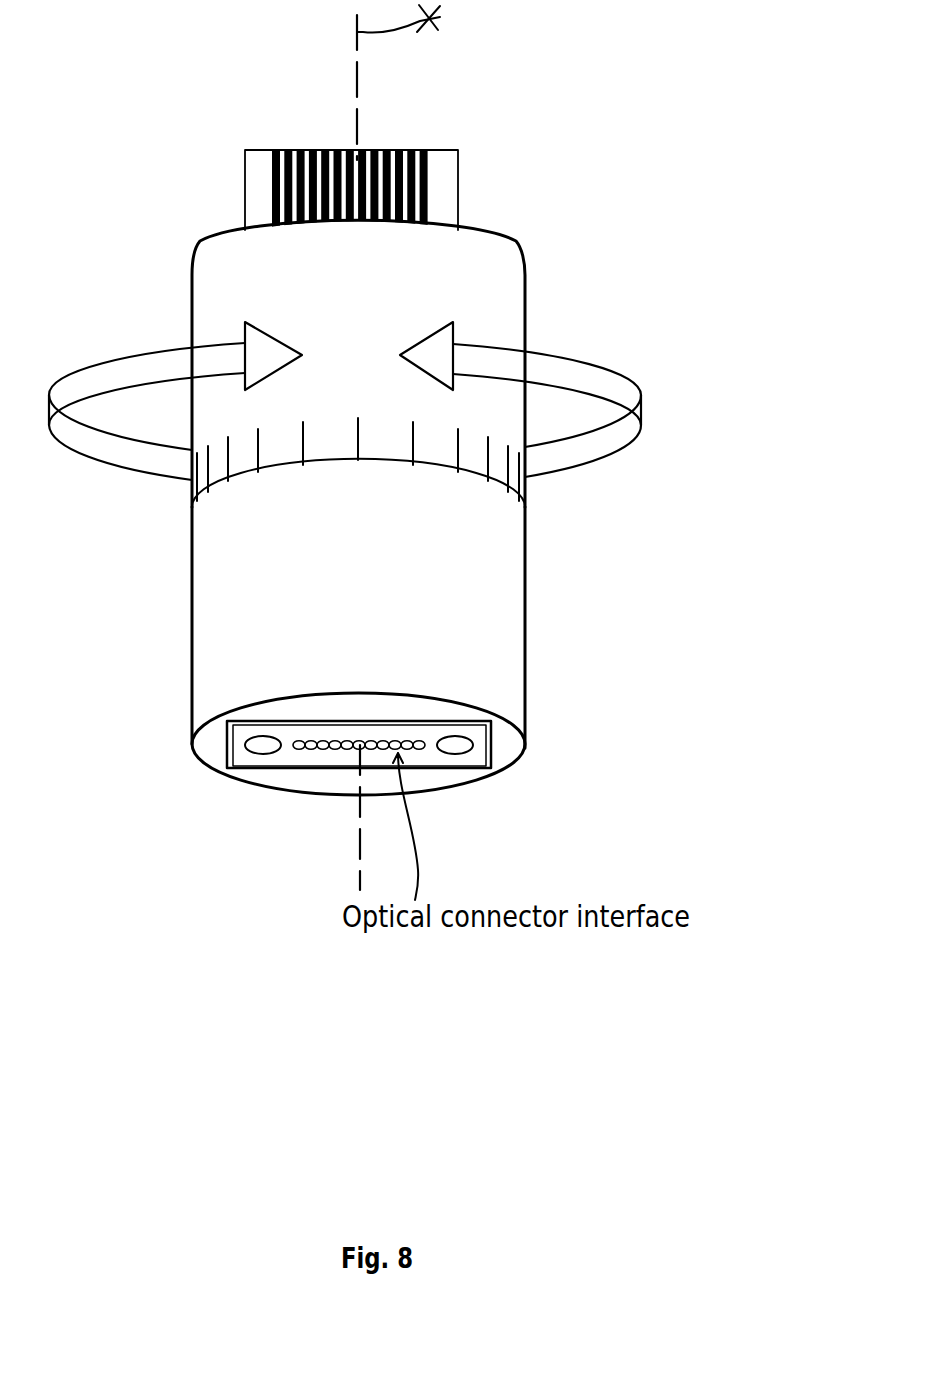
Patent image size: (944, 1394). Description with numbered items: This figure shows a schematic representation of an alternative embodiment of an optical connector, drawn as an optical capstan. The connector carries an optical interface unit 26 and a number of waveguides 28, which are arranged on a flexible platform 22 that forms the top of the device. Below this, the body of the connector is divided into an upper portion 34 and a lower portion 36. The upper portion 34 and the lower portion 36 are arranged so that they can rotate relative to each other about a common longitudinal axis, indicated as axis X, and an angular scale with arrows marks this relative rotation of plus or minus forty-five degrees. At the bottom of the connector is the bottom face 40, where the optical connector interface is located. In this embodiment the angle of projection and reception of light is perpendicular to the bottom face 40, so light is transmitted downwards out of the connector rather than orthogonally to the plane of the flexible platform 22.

The flexible platform 22 is at (450, 205).
The optical interface unit 26 is at (240, 752).
The waveguides 28 is at (430, 165).
The upper portion 34 is at (513, 286).
The lower portion 36 is at (511, 550).
The bottom face 40 is at (508, 748).